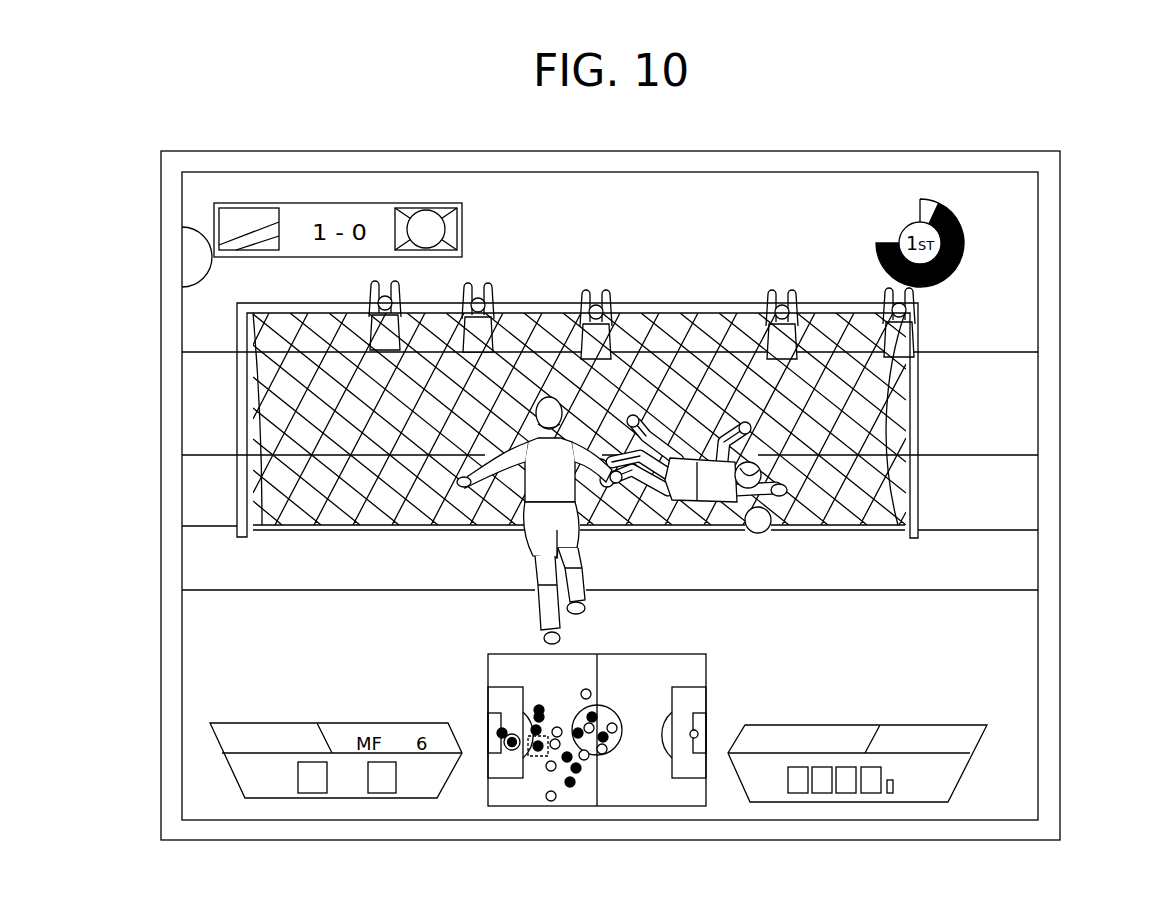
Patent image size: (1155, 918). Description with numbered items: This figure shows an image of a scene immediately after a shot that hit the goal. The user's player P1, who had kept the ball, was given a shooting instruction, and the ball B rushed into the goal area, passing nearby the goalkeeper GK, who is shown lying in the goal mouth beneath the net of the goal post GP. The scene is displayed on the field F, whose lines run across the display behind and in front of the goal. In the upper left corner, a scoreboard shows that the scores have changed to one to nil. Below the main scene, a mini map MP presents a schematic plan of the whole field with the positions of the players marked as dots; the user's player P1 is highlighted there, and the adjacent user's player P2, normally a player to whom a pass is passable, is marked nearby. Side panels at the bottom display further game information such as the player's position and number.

The goal post GP is at (912, 333).
The field F is at (1013, 410).
The user's player P1 is at (535, 540).
The goalkeeper GK is at (688, 495).
The ball B is at (761, 534).
The adjacent user's player P2 is at (535, 758).
The mini map MP is at (688, 798).